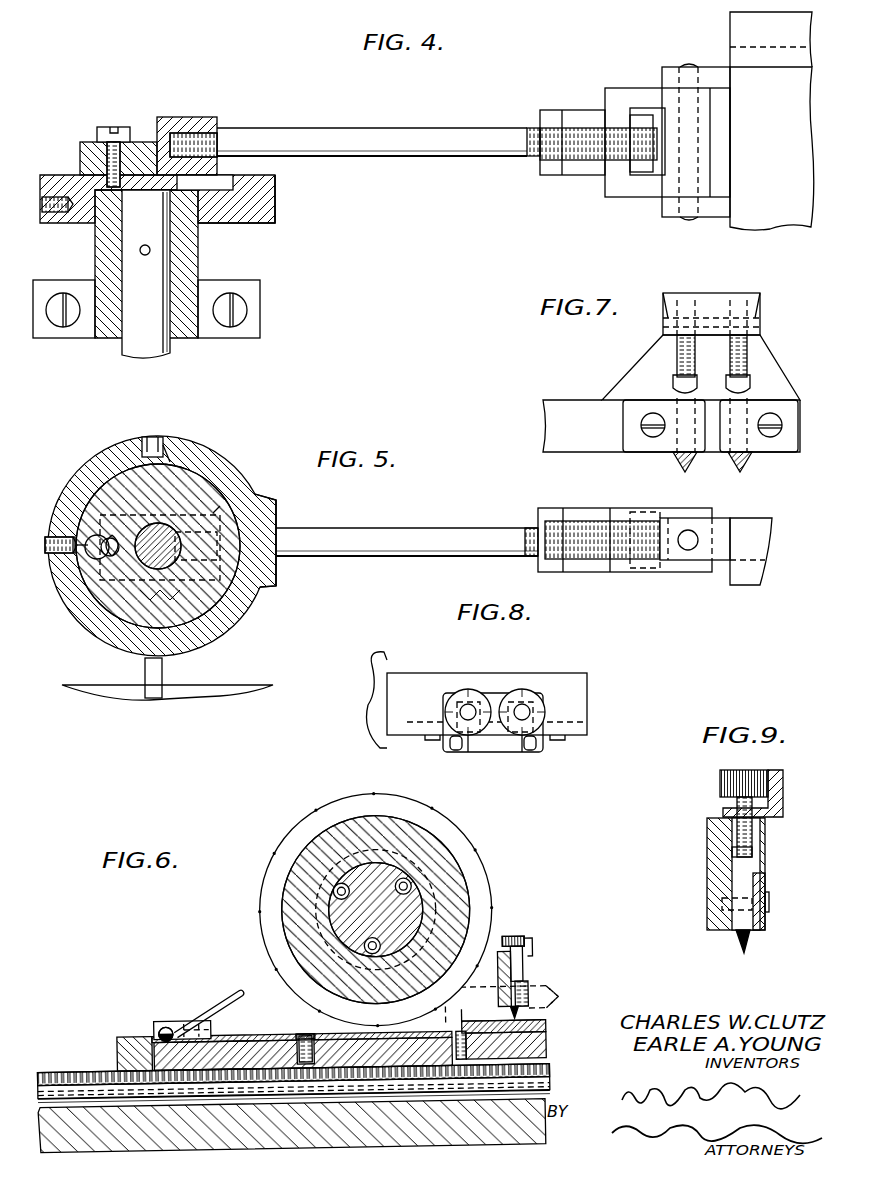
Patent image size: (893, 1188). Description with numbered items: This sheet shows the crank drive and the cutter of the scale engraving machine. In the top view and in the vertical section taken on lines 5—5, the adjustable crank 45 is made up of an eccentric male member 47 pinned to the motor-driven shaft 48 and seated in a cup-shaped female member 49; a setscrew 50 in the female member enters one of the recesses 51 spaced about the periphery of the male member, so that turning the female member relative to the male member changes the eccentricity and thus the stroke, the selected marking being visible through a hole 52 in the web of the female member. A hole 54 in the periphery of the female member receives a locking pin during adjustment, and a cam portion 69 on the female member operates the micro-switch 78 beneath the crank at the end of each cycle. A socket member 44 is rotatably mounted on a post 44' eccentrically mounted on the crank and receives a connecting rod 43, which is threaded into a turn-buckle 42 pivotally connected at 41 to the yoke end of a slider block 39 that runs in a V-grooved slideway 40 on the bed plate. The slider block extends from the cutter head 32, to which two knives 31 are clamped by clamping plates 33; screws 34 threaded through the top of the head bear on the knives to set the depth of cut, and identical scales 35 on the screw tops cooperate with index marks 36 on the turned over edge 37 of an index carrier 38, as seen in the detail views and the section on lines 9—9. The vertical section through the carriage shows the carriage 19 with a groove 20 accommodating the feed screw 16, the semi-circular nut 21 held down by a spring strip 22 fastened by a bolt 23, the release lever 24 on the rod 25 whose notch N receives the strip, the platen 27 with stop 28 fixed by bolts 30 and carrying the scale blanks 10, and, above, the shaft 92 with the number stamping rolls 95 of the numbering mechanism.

In FIG. 4, the section line 5— 5 is at (33, 205).
In FIG. 7, the section line 9— 9 is at (738, 480).
In FIG. 6, the scale blank 10 is at (550, 1023).
In FIG. 6, the feed screw 16 is at (72, 1068).
In FIG. 6, the carriage 19 is at (547, 1062).
In FIG. 6, the groove 20 is at (548, 1046).
In FIG. 6, the semi-circular nut 21 is at (117, 1041).
In FIG. 6, the spring strip 22 is at (240, 1041).
In FIG. 6, the bolt 23 is at (284, 1034).
In FIG. 6, the release lever 24 is at (222, 1003).
In FIG. 6, the rod 25 is at (166, 1024).
In FIG. 6, the notch N is at (159, 1030).
In FIG. 6, the platen 27 is at (548, 1030).
In FIG. 6, the stop 28 is at (318, 1035).
In FIG. 6, the bolt 30 is at (465, 1010).
In FIG. 7, the knife 31 is at (676, 456).
In FIG. 9, the knife 31 is at (738, 935).
In FIG. 6, the knife 31 is at (522, 1016).
In FIG. 7, the cutter head 32 is at (776, 371).
In FIG. 8, the cutter head 32 is at (589, 686).
In FIG. 9, the cutter head 32 is at (707, 880).
In FIG. 7, the clamping plate 33 is at (640, 445).
In FIG. 9, the clamping plate 33 is at (766, 885).
In FIG. 6, the clamping plate 33 is at (531, 995).
In FIG. 7, the adjusting screw 34 is at (676, 350).
In FIG. 8, the adjusting screw 34 is at (515, 695).
In FIG. 9, the adjusting screw 34 is at (736, 805).
In FIG. 6, the adjusting screw 34 is at (517, 940).
In FIG. 8, the scale 35 is at (460, 692).
In FIG. 7, the index mark 36 is at (690, 294).
In FIG. 8, the index mark 36 is at (470, 740).
In FIG. 8, the turned over edge 37 is at (530, 750).
In FIG. 9, the turned over edge 37 is at (770, 772).
In FIG. 6, the turned over edge 37 is at (530, 942).
In FIG. 8, the index carrier 38 is at (452, 745).
In FIG. 9, the index carrier 38 is at (784, 802).
In FIG. 6, the index carrier 38 is at (536, 951).
In FIG. 4, the slider block 39 is at (772, 148).
In FIG. 5, the slider block 39 is at (720, 521).
In FIG. 8, the slider block 39 is at (368, 676).
In FIG. 6, the slider block 39 is at (561, 992).
In FIG. 4, the V-grooved slideway 40 is at (771, 39).
In FIG. 5, the V-grooved slideway 40 is at (770, 540).
In FIG. 4, the pivotal connection 41 is at (685, 218).
In FIG. 5, the pivotal connection 41 is at (688, 552).
In FIG. 4, the turn-buckle 42 is at (645, 195).
In FIG. 5, the turn-buckle 42 is at (580, 572).
In FIG. 4, the connecting rod 43 is at (440, 157).
In FIG. 5, the connecting rod 43 is at (447, 529).
In FIG. 4, the socket member 44 is at (187, 129).
In FIG. 5, the socket member 44 is at (253, 523).
In FIG. 4, the post 44' is at (115, 144).
In FIG. 5, the post 44' is at (60, 587).
In FIG. 4, the adjustable crank 45 is at (72, 176).
In FIG. 5, the adjustable crank 45 is at (100, 455).
In FIG. 4, the eccentric male member 47 is at (230, 224).
In FIG. 5, the eccentric male member 47 is at (200, 464).
In FIG. 4, the motor-driven shaft 48 is at (140, 358).
In FIG. 5, the motor-driven shaft 48 is at (130, 565).
In FIG. 4, the female member 49 is at (270, 224).
In FIG. 5, the female member 49 is at (214, 512).
In FIG. 4, the setscrew 50 is at (62, 214).
In FIG. 5, the setscrew 50 is at (60, 536).
In FIG. 5, the recess 51 is at (174, 450).
In FIG. 4, the hole 52 is at (232, 183).
In FIG. 5, the hole 52 is at (215, 560).
In FIG. 5, the hole 54 is at (153, 436).
In FIG. 5, the cam portion 69 is at (266, 572).
In FIG. 5, the micro-switch 78 is at (144, 672).
In FIG. 6, the shaft 92 is at (414, 899).
In FIG. 6, the number stamping roll 95 is at (464, 845).